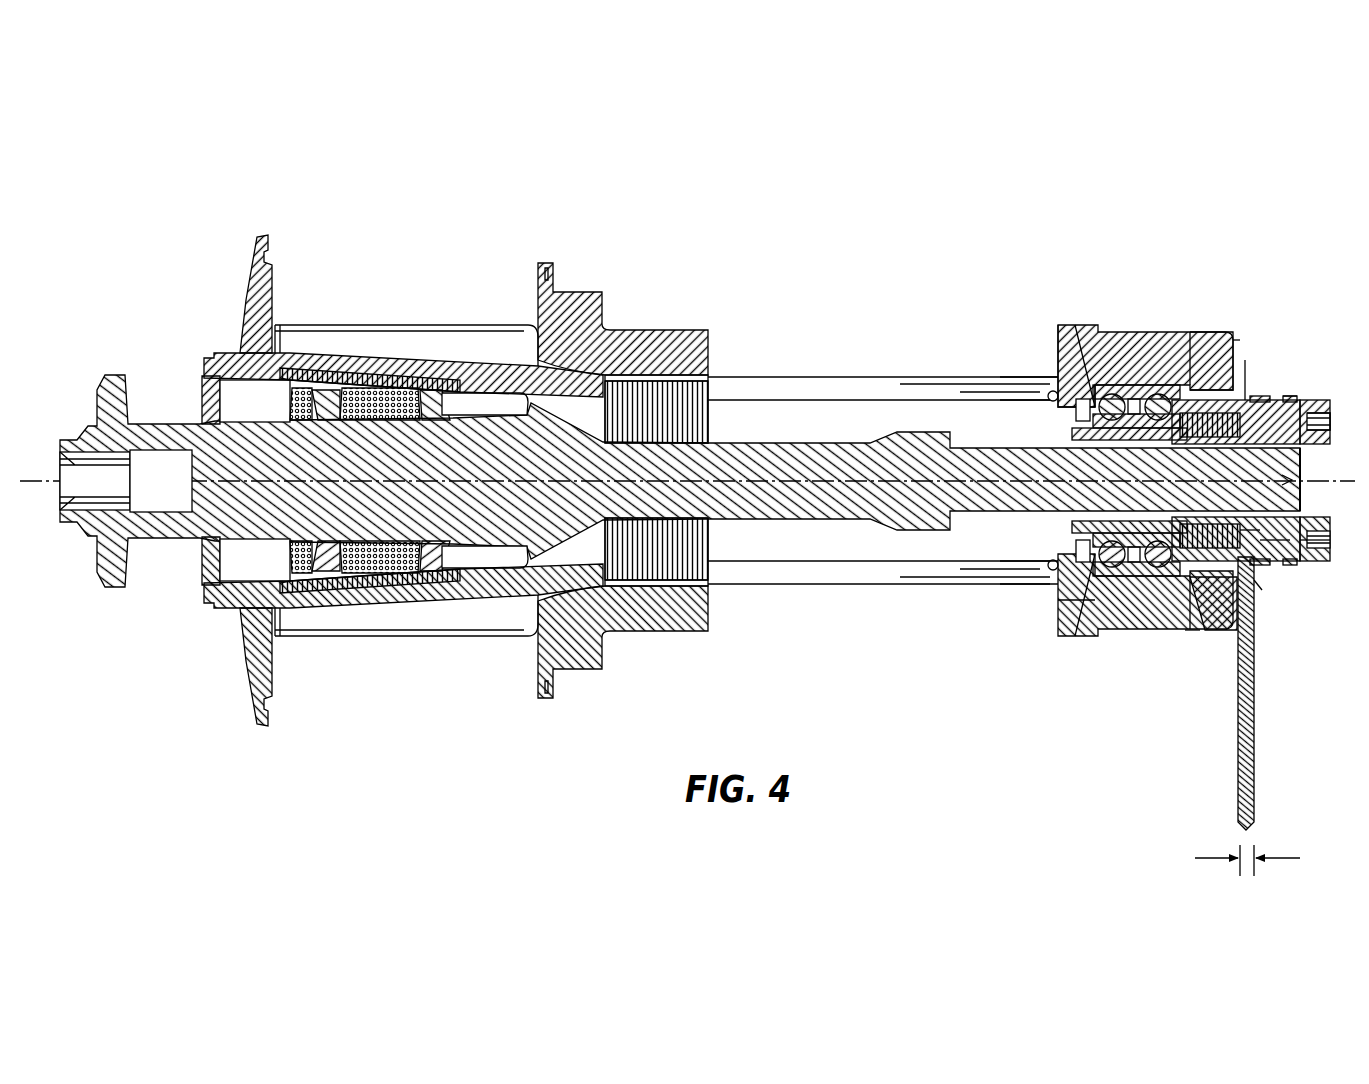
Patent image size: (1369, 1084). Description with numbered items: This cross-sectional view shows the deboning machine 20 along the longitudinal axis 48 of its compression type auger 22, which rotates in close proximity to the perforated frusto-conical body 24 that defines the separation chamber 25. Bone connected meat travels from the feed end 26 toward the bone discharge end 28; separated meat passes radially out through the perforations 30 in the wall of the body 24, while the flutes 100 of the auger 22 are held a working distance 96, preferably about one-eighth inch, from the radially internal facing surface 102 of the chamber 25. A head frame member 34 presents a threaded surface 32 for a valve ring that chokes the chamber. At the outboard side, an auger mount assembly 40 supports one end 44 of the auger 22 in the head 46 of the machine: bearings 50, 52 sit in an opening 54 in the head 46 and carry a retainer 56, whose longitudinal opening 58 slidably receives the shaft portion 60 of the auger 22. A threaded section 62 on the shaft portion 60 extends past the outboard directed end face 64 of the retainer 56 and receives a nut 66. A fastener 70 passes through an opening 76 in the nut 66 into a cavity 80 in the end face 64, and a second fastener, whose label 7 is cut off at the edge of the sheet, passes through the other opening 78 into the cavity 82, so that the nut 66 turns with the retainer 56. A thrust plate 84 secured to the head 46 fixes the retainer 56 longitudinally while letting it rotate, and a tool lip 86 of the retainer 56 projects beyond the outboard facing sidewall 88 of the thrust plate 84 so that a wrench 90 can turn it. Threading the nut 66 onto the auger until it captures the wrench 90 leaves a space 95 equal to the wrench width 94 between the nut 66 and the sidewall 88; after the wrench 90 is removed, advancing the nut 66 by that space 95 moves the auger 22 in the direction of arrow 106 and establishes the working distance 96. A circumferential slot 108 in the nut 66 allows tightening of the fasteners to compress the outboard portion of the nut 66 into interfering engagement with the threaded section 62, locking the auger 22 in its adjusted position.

The deboning machine 20 is at (940, 186).
The auger 22 is at (796, 425).
The perforated frusto-conical body 24 is at (497, 377).
The separation chamber 25 is at (228, 345).
The feed end 26 is at (195, 580).
The bone discharge end 28 is at (724, 541).
The perforations 30 is at (405, 380).
The threaded surface 32 is at (660, 552).
The head frame member 34 is at (652, 373).
The auger mount assembly 40 is at (1156, 318).
The end of auger 44 is at (1306, 484).
The head 46 is at (1060, 640).
The longitudinal axis 48 is at (128, 538).
The bearing 50 is at (1090, 335).
The bearing 52 is at (1162, 590).
The opening 54 is at (1110, 590).
The retainer 56 is at (1120, 335).
The longitudinal opening 58 is at (1030, 512).
The shaft portion 60 is at (997, 443).
The threaded section 62 is at (1222, 397).
The outboard directed end face 64 is at (1249, 536).
The nut 66 is at (1302, 384).
The fastener 70 is at (1318, 402).
The opening 76 is at (1328, 429).
The opening 78 is at (1276, 548).
The nut face 7 is at (1322, 557).
The cavity 80 is at (1245, 358).
The cavity 82 is at (1192, 641).
The thrust plate 84 is at (1212, 327).
The tool lip 86 is at (1236, 632).
The outboard facing sidewall 88 is at (1240, 338).
The wrench 90 is at (1252, 750).
The width 94 is at (1215, 858).
The space 95 is at (1262, 592).
The working distance 96 is at (198, 372).
The flutes 100 is at (214, 401).
The radially internal facing surface 102 is at (300, 378).
The arrow 106 is at (78, 407).
The slot 108 is at (1282, 396).